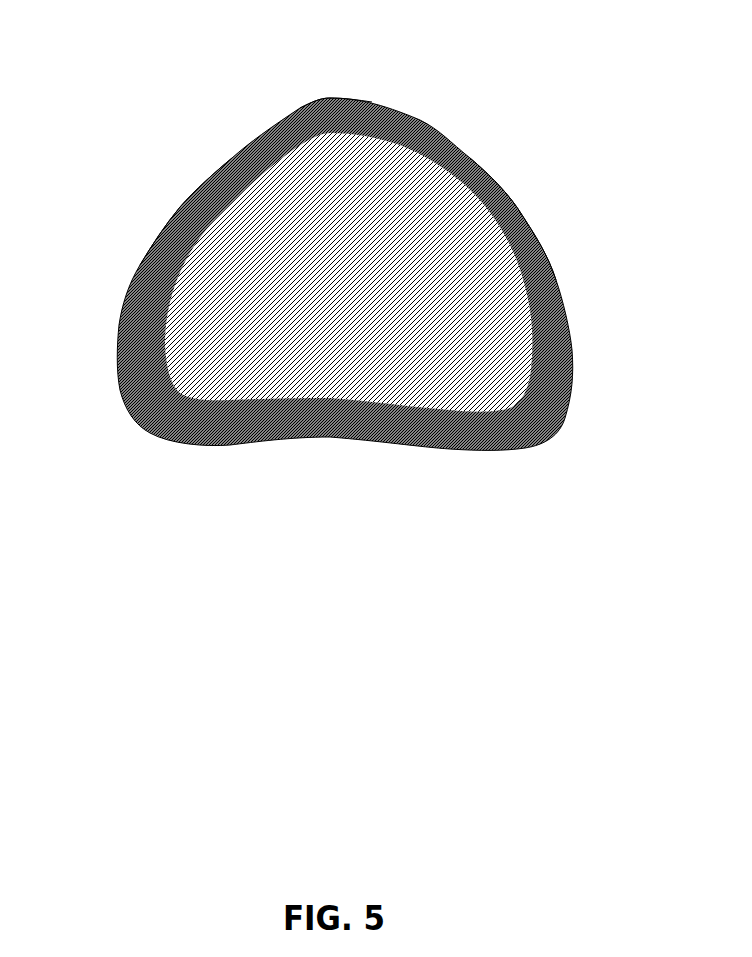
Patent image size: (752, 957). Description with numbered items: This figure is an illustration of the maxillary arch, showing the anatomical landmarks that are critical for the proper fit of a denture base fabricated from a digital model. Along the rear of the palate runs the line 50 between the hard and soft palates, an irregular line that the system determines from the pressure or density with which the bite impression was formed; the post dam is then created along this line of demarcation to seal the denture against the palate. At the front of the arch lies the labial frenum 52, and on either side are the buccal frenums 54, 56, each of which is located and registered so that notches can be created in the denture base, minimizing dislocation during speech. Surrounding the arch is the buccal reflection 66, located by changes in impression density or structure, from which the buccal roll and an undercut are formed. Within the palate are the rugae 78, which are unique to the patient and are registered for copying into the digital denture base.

The line between the hard and soft palates 50 is at (302, 430).
The labial frenum 52 is at (328, 100).
The buccal frenum 54 is at (463, 212).
The buccal frenum 56 is at (210, 206).
The buccal reflection 66 is at (427, 133).
The rugae 78 is at (398, 298).